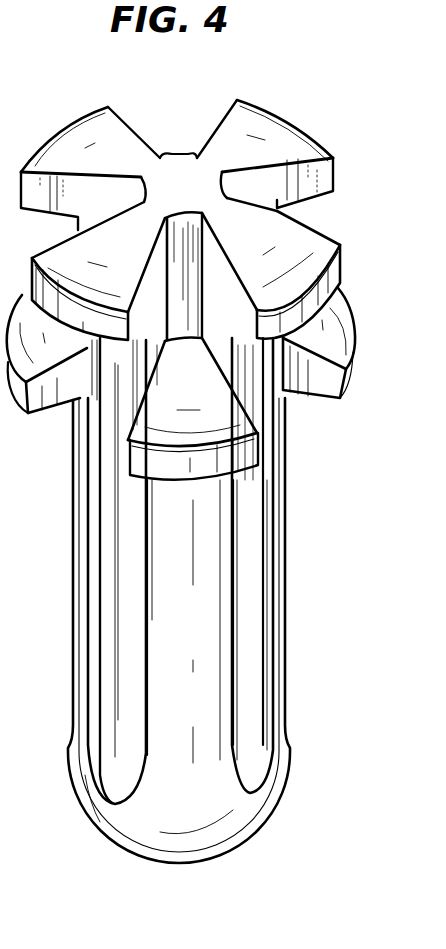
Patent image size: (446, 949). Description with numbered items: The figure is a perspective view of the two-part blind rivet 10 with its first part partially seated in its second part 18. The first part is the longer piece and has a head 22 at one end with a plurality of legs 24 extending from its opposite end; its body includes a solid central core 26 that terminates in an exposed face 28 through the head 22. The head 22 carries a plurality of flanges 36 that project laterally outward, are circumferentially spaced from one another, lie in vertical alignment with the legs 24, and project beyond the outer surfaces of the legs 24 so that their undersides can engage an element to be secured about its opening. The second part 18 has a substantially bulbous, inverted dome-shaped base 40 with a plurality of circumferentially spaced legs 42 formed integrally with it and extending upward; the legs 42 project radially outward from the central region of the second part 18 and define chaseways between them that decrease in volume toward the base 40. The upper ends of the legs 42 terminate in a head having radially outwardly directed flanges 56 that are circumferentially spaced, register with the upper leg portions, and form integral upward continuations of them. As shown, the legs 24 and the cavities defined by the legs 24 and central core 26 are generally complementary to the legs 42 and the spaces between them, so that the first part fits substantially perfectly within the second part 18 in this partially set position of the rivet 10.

The blind rivet 10 is at (314, 502).
The second part 18 is at (80, 712).
The head 22 is at (304, 183).
The legs 24 is at (108, 592).
The central core 26 is at (180, 267).
The exposed face 28 is at (177, 168).
The flanges 36 is at (67, 128).
The base 40 is at (215, 827).
The legs 42 is at (204, 713).
The flanges 56 is at (200, 398).